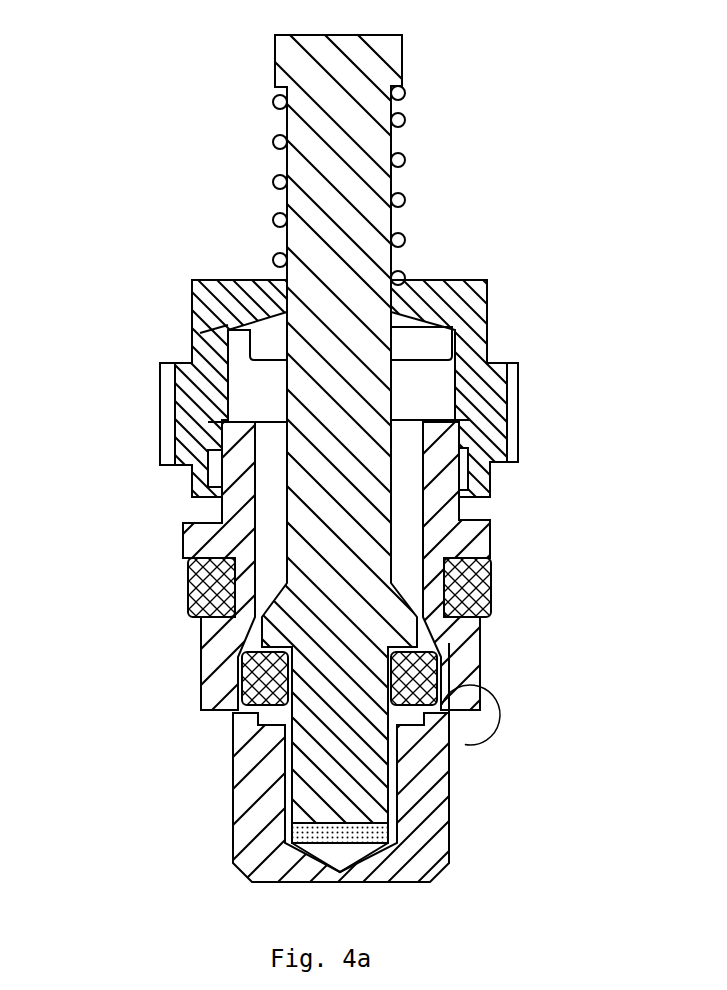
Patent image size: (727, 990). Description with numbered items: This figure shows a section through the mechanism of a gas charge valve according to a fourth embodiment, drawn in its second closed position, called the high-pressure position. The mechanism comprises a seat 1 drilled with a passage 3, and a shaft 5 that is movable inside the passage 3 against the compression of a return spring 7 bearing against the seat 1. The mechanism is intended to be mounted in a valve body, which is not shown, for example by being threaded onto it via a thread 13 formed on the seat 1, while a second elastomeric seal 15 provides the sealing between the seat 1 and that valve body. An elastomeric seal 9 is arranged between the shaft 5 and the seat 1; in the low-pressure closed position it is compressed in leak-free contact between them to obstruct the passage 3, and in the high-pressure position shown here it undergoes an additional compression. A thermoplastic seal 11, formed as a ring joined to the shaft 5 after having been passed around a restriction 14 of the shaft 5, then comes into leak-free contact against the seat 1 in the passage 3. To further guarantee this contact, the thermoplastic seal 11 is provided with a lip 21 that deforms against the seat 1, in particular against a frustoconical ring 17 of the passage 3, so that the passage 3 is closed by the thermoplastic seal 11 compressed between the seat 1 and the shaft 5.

The seat 1 is at (490, 523).
The passage 3 is at (457, 352).
The shaft 5 is at (370, 131).
The return spring 7 is at (284, 143).
The elastomeric seal 9 is at (453, 643).
The thermoplastic seal 11 is at (433, 832).
The thread 13 is at (160, 410).
The restriction 14 is at (335, 797).
The second elastomeric seal 15 is at (193, 598).
The frustoconical ring 17 is at (232, 708).
The lip 21 is at (460, 748).